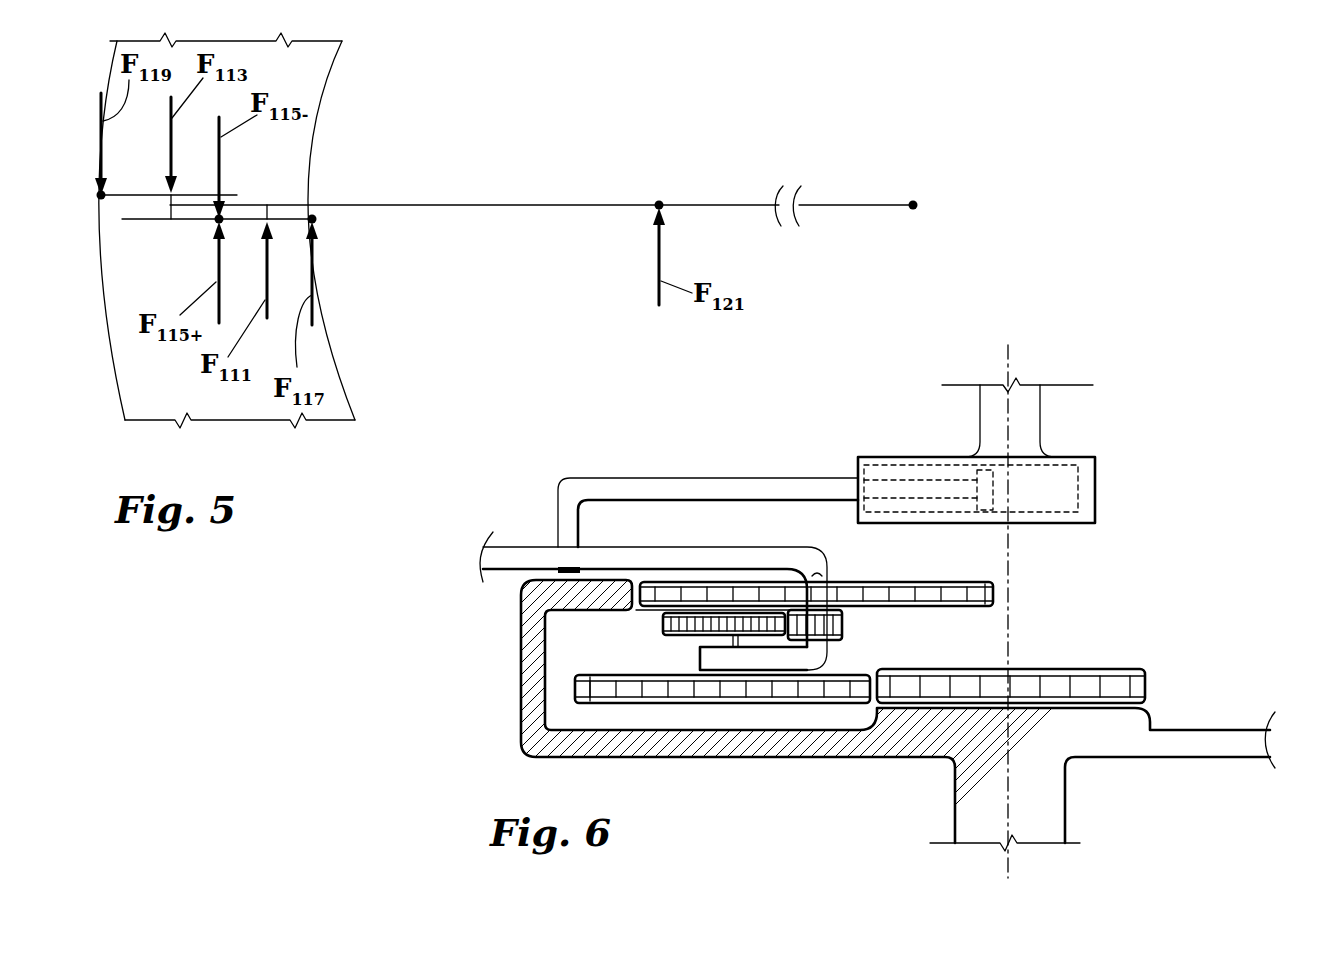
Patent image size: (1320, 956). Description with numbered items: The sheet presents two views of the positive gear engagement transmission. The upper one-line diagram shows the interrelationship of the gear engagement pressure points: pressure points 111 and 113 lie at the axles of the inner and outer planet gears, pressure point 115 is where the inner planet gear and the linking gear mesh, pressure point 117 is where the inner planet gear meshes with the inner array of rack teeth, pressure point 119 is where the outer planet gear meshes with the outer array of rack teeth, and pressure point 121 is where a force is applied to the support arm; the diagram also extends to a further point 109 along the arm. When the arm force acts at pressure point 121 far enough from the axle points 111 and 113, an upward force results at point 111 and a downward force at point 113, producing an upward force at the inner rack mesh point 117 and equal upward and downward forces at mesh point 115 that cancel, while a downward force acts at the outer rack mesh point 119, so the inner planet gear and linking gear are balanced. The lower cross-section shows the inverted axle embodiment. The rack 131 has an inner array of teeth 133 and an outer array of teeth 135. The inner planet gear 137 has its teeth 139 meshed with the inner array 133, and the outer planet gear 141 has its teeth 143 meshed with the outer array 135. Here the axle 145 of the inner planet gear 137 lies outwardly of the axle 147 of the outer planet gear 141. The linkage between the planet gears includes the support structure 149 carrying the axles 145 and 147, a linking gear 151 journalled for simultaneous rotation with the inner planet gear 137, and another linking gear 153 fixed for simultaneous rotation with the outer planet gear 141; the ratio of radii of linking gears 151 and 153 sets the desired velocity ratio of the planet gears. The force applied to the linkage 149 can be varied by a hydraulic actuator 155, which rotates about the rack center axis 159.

In FIG. 5, the pivot point 109 is at (911, 203).
In FIG. 5, the pressure point 111 is at (272, 205).
In FIG. 5, the pressure point 113 is at (172, 212).
In FIG. 5, the pressure point 115 is at (222, 216).
In FIG. 5, the pressure point 117 is at (316, 221).
In FIG. 5, the pressure point 119 is at (100, 198).
In FIG. 5, the pressure point 121 is at (657, 203).
In FIG. 6, the rack 131 is at (1180, 735).
In FIG. 6, the inner array of teeth 133 is at (1145, 686).
In FIG. 6, the outer array of teeth 135 is at (637, 580).
In FIG. 6, the inner planet gear 137 is at (760, 705).
In FIG. 6, the teeth 139 is at (655, 693).
In FIG. 6, the outer planet gear 141 is at (948, 578).
In FIG. 6, the teeth 143 is at (995, 594).
In FIG. 6, the axle 145 is at (720, 642).
In FIG. 6, the axle 147 is at (817, 574).
In FIG. 6, the support structure 149 is at (540, 557).
In FIG. 6, the linking gear 151 is at (663, 622).
In FIG. 6, the linking gear 153 is at (845, 627).
In FIG. 6, the hydraulic actuator 155 is at (743, 488).
In FIG. 6, the rack center axis 159 is at (1010, 868).